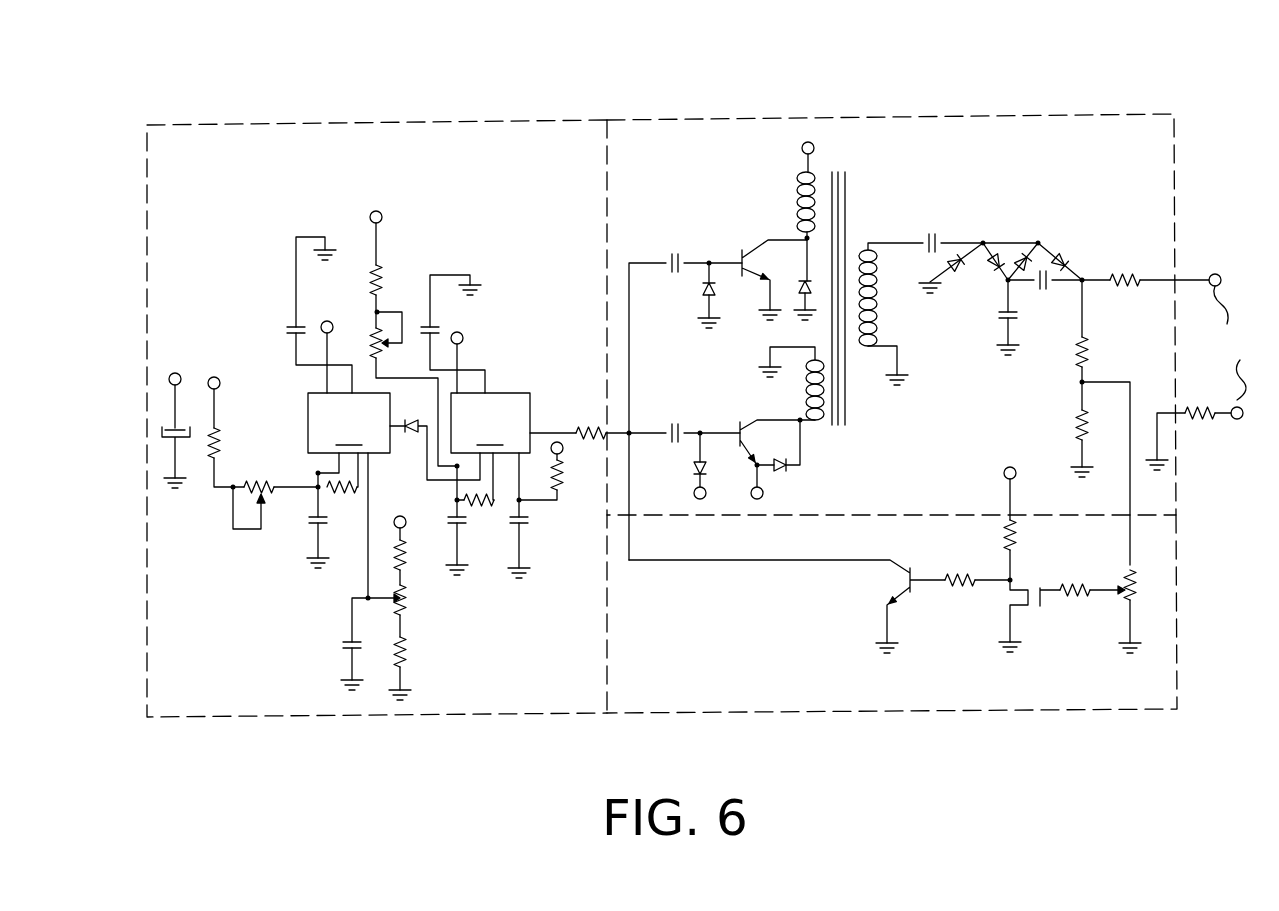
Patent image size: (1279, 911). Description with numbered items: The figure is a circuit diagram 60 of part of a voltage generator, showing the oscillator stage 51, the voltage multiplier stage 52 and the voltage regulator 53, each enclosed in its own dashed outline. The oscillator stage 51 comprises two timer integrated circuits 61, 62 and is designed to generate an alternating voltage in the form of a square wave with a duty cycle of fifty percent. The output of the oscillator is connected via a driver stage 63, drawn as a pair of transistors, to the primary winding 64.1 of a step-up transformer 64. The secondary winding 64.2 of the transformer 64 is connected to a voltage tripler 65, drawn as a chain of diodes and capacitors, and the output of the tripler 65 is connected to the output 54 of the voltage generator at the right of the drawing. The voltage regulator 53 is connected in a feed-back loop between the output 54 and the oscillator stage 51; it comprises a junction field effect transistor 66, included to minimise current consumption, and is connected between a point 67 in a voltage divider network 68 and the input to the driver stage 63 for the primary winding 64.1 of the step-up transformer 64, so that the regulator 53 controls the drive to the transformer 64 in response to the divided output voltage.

The circuit diagram 60 is at (890, 55).
The oscillator stage 51 is at (505, 118).
The voltage multiplier stage 52 is at (1175, 192).
The voltage regulator 53 is at (1178, 592).
The output 54 is at (1203, 372).
The 555 timer 61 is at (349, 423).
The 555 timer 62 is at (490, 423).
The driver stage 63 is at (740, 405).
The step-up transformer 64 is at (848, 175).
The primary winding 64.1 is at (792, 203).
The secondary winding 64.2 is at (880, 295).
The voltage tripler 65 is at (1030, 232).
The junction field effect transistor 66 is at (1000, 600).
The point 67 is at (1086, 382).
The voltage divider network 68 is at (1070, 368).